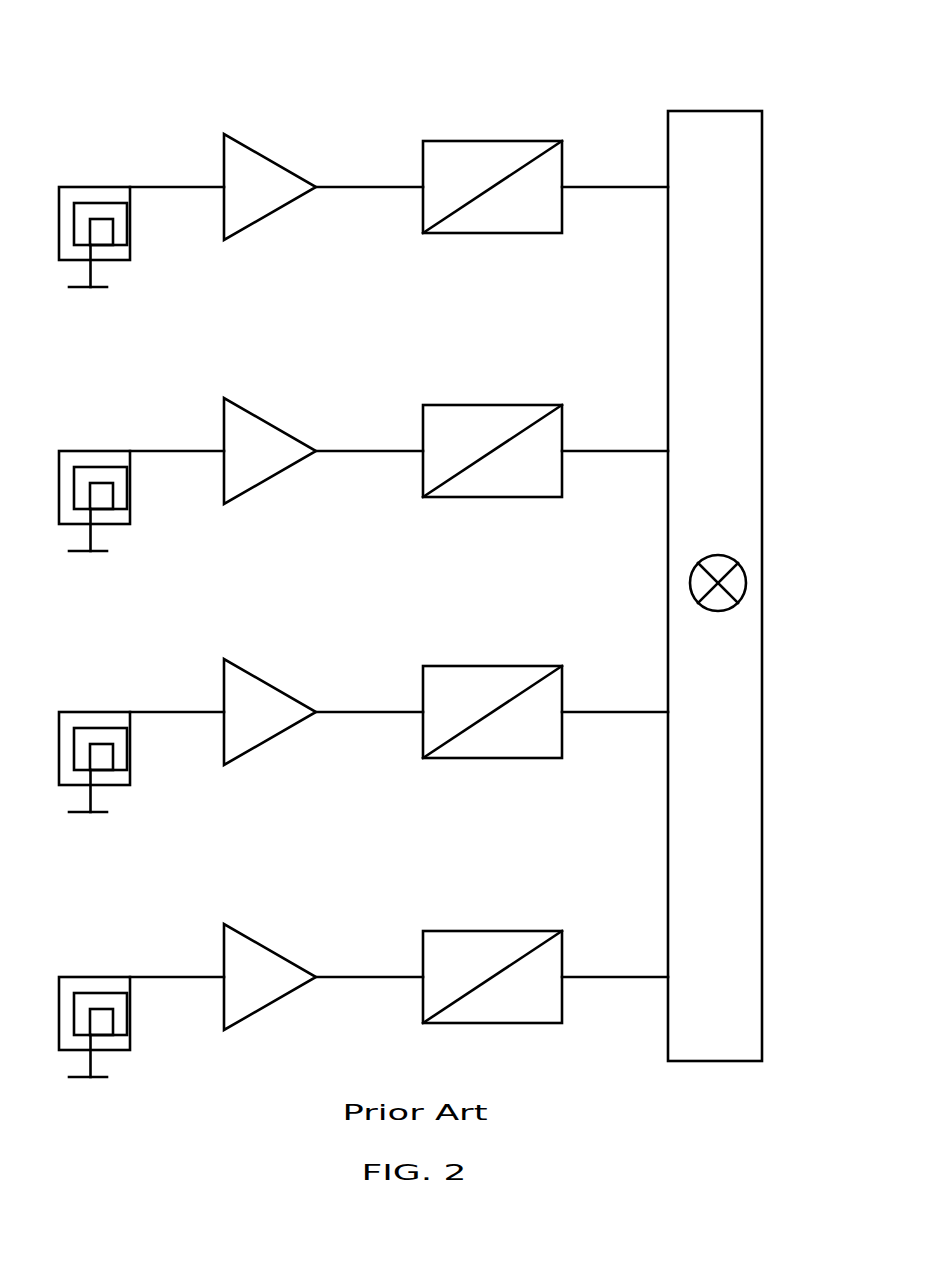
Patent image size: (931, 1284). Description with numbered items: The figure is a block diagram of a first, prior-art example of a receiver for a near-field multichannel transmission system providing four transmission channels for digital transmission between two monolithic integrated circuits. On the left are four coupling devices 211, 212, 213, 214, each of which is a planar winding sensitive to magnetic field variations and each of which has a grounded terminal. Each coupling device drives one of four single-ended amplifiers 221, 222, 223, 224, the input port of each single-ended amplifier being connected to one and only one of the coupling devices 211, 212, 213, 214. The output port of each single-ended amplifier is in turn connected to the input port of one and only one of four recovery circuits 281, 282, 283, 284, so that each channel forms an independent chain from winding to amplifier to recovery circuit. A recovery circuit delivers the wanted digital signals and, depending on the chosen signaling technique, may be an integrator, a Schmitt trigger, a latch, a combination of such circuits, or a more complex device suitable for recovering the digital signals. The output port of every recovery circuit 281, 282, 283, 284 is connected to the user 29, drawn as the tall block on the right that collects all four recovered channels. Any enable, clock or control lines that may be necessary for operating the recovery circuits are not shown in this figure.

The coupling device 211 is at (94, 173).
The coupling device 212 is at (94, 437).
The coupling device 213 is at (94, 698).
The coupling device 214 is at (94, 963).
The single-ended amplifier 221 is at (253, 137).
The single-ended amplifier 222 is at (253, 401).
The single-ended amplifier 223 is at (253, 662).
The single-ended amplifier 224 is at (253, 927).
The recovery circuit 281 is at (495, 132).
The recovery circuit 282 is at (495, 396).
The recovery circuit 283 is at (495, 657).
The recovery circuit 284 is at (495, 922).
The user 29 is at (717, 102).